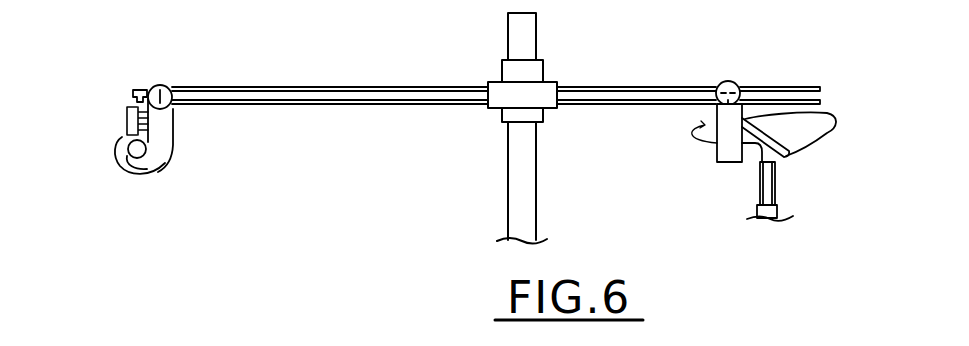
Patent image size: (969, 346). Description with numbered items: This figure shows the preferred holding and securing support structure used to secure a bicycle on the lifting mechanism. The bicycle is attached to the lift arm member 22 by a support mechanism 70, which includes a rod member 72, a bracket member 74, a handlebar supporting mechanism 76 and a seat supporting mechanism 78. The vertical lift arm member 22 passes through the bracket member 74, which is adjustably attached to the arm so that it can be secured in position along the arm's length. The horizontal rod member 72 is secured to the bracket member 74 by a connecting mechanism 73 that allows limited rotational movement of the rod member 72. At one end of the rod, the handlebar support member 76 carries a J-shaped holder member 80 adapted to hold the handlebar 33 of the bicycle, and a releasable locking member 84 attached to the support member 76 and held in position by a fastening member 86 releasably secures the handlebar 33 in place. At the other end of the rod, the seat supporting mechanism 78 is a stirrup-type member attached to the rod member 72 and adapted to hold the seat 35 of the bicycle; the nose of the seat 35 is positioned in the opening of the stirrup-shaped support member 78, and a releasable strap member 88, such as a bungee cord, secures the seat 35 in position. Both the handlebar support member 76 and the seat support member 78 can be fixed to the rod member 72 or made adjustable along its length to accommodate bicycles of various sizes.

The lift arm member 22 is at (530, 162).
The handlebar 33 is at (140, 153).
The seat 35 is at (820, 117).
The support mechanism 70 is at (432, 167).
The rod member 72 is at (325, 88).
The connecting mechanism 73 is at (537, 67).
The bracket member 74 is at (643, 88).
The handlebar supporting mechanism 76 is at (167, 125).
The seat supporting mechanism 78 is at (725, 147).
The J-shaped holder member 80 is at (143, 173).
The releasable locking member 84 is at (147, 137).
The fastening member 86 is at (143, 90).
The releasable strap member 88 is at (783, 158).